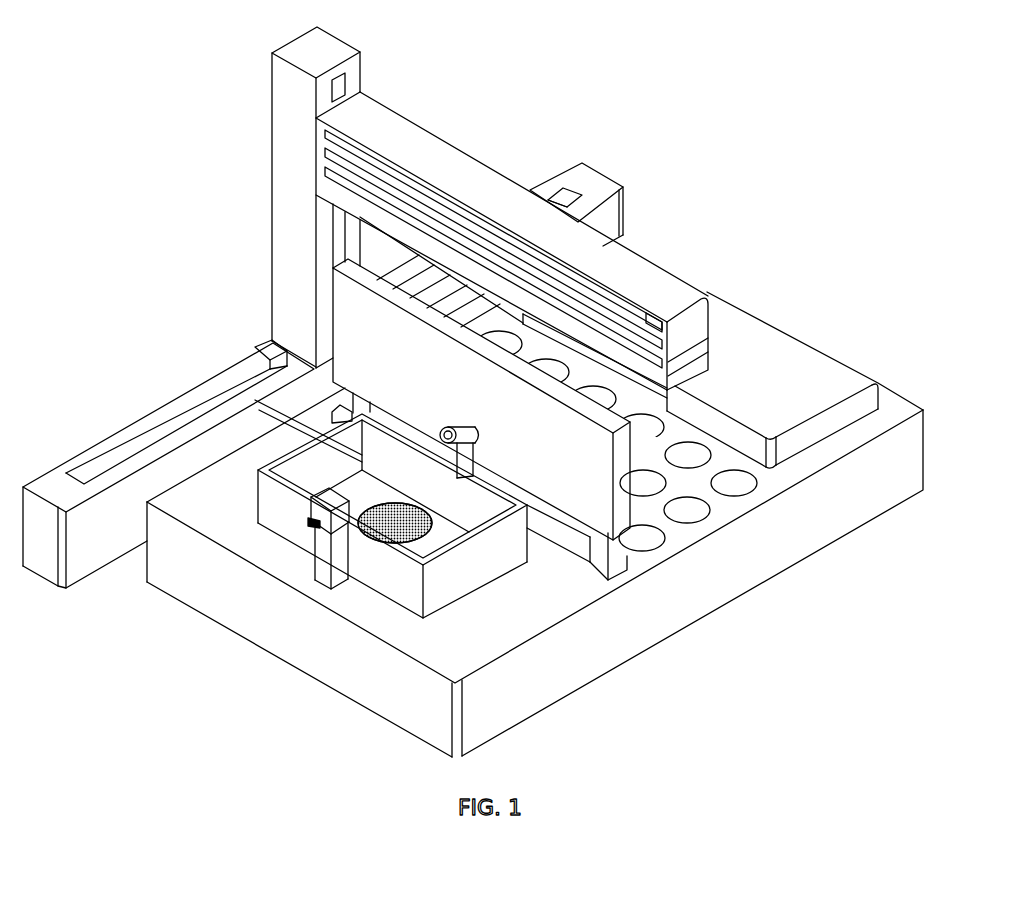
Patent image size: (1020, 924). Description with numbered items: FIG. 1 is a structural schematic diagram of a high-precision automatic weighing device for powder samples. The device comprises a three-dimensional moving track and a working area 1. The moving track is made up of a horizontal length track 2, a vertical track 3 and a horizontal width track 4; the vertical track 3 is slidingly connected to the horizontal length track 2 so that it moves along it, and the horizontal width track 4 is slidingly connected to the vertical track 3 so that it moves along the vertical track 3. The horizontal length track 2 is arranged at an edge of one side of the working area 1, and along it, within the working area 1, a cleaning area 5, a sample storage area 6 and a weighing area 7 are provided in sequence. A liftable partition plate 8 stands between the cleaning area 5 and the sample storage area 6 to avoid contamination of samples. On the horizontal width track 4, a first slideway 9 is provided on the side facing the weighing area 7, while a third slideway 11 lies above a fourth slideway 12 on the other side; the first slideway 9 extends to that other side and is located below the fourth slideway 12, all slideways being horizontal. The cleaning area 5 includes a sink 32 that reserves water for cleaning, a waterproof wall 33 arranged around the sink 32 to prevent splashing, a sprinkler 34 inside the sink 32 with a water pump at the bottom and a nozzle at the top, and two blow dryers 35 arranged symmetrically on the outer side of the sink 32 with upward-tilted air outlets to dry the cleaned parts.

The working area 1 is at (250, 587).
The horizontal length track 2 is at (70, 478).
The vertical track 3 is at (298, 213).
The horizontal width track 4 is at (392, 144).
The cleaning area 5 is at (480, 604).
The sample storage area 6 is at (728, 486).
The weighing area 7 is at (775, 337).
The liftable partition plate 8 is at (481, 392).
The first slideway 9 is at (403, 215).
The third slideway 11 is at (647, 322).
The fourth slideway 12 is at (598, 320).
The sink 32 is at (372, 575).
The waterproof wall 33 is at (372, 575).
The sprinkler 34 is at (322, 492).
The blow dryer 35 is at (312, 521).